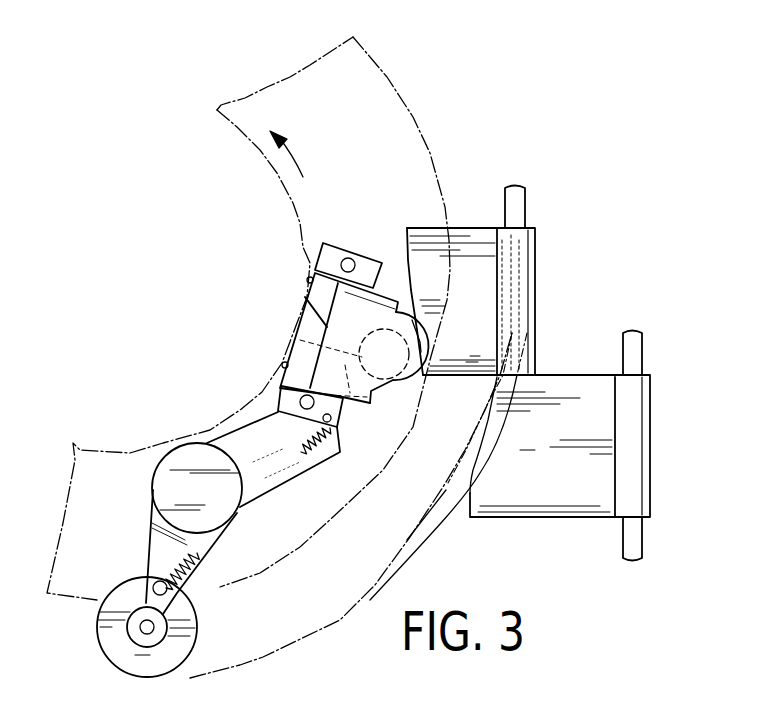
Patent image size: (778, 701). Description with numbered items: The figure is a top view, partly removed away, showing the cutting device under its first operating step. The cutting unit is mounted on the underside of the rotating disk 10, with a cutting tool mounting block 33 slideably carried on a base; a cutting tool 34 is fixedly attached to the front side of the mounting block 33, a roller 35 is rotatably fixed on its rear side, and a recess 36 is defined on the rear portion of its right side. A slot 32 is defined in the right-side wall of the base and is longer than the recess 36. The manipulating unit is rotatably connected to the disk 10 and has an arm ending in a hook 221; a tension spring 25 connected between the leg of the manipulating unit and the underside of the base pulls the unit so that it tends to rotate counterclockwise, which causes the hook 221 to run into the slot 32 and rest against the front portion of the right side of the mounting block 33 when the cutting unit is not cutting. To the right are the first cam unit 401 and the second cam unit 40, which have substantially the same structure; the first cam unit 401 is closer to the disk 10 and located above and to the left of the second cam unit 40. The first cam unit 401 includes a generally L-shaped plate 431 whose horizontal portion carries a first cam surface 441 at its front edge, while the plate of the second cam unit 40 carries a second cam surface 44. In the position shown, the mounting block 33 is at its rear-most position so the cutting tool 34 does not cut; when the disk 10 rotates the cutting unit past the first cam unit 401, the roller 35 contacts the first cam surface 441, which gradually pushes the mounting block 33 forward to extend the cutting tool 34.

The disk 10 is at (384, 95).
The tension spring 25 is at (300, 441).
The slot 32 is at (282, 397).
The cutting tool mounting block 33 is at (300, 346).
The cutting tool 34 is at (310, 298).
The roller 35 is at (423, 342).
The recess 36 is at (380, 393).
The second cam unit 40 is at (672, 394).
The second cam surface 44 is at (481, 452).
The hook 221 is at (384, 354).
The first cam unit 401 is at (551, 239).
The L-shaped plate 431 is at (458, 377).
The first cam surface 441 is at (406, 262).